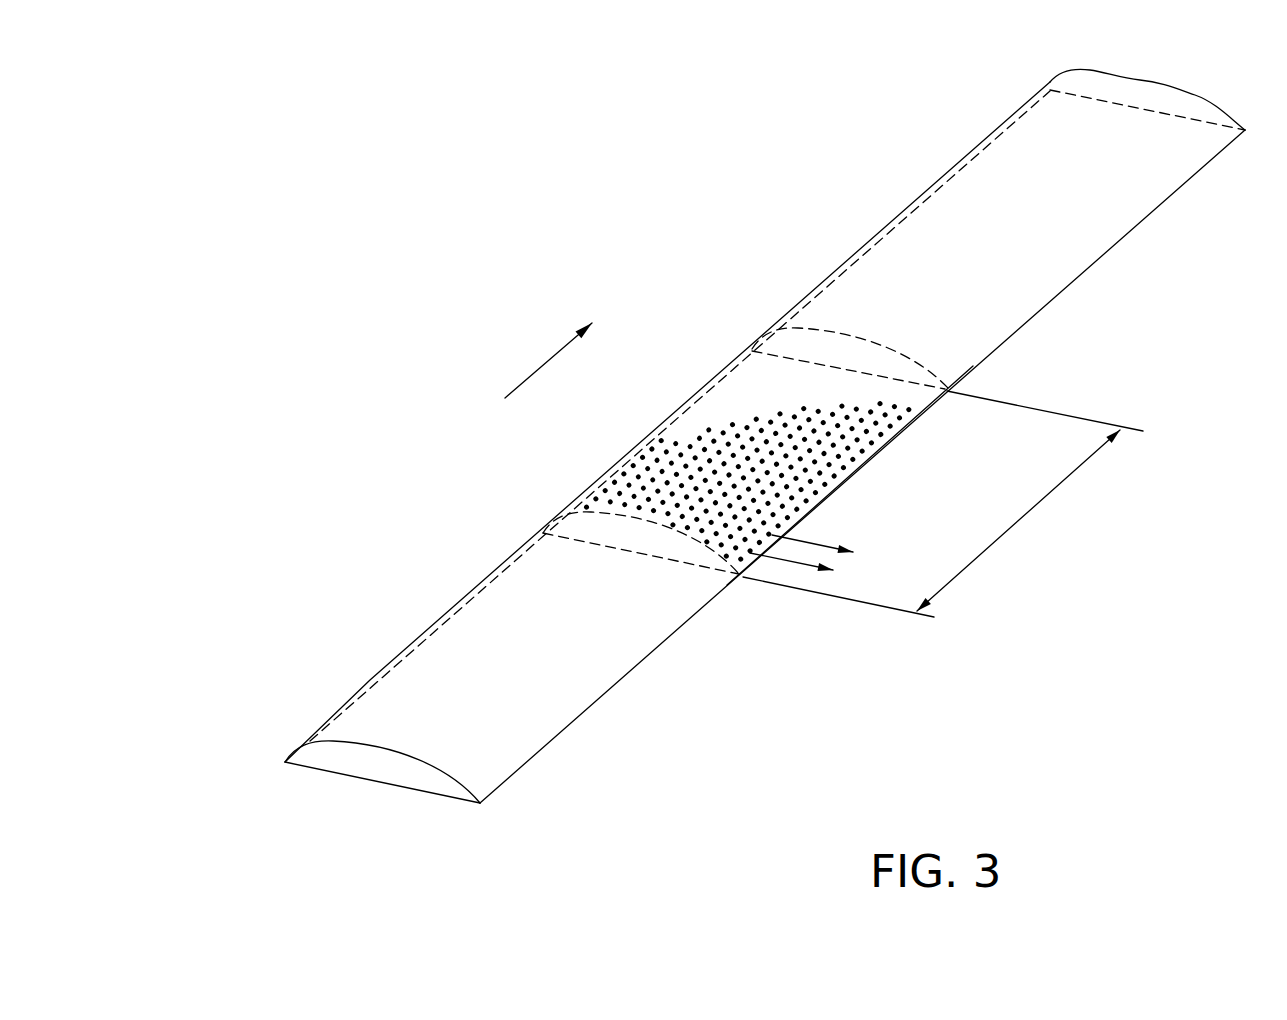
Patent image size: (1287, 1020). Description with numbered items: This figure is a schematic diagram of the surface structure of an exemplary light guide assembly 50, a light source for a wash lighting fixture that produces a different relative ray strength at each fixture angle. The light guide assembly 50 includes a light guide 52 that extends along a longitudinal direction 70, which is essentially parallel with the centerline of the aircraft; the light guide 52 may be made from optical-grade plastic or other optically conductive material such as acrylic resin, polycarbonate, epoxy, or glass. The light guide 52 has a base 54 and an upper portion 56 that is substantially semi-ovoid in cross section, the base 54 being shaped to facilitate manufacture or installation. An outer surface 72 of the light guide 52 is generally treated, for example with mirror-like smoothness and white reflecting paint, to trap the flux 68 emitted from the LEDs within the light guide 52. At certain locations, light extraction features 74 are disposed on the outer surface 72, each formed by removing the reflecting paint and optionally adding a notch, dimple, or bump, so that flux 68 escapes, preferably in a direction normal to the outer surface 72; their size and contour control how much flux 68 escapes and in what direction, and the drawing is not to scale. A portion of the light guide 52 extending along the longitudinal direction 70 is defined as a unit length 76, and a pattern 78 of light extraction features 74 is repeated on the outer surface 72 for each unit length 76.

The light guide assembly 50 is at (250, 532).
The light guide 52 is at (633, 432).
The base 54 is at (1047, 303).
The upper portion 56 is at (1070, 202).
The flux 68 is at (820, 548).
The longitudinal direction 70 is at (548, 361).
The outer surface 72 is at (625, 498).
The light extraction features 74 is at (885, 435).
The unit length 76 is at (1035, 507).
The pattern 78 is at (697, 383).